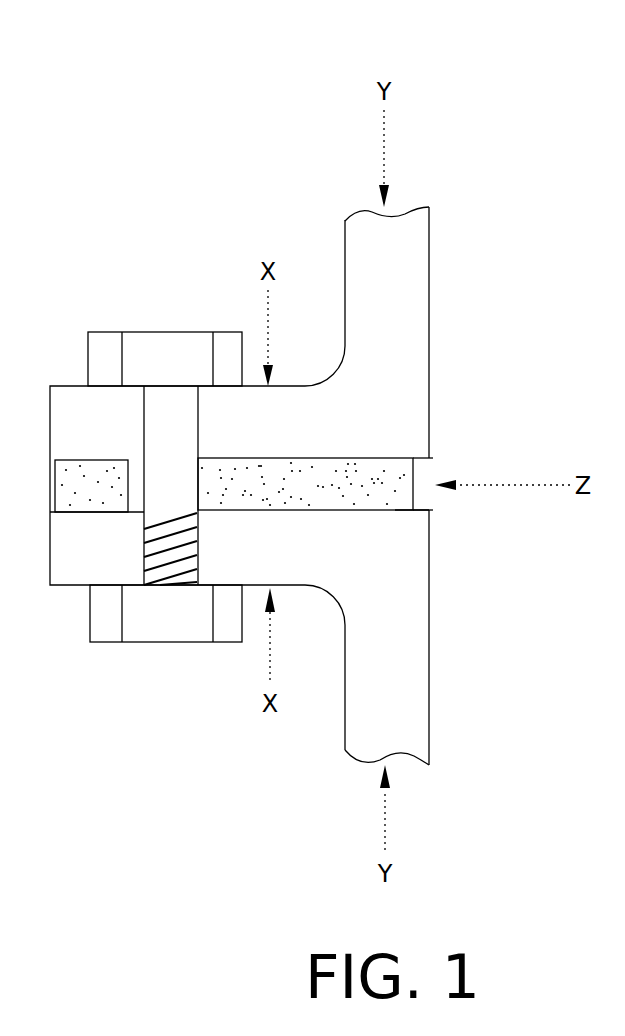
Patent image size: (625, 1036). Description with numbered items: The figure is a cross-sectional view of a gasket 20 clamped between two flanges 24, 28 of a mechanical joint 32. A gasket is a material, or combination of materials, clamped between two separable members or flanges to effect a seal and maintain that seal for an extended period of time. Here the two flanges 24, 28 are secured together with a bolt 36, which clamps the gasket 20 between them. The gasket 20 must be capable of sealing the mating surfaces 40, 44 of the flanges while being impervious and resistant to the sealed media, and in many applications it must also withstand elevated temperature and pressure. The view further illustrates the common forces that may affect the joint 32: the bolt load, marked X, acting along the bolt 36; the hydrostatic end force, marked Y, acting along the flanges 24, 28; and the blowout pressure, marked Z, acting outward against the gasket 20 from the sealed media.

The mechanical joint 32 is at (304, 393).
The flange 24 is at (429, 315).
The flange 28 is at (429, 668).
The bolt 36 is at (122, 386).
The mating surface 40 is at (403, 458).
The gasket 20 is at (436, 462).
The mating surface 44 is at (387, 512).